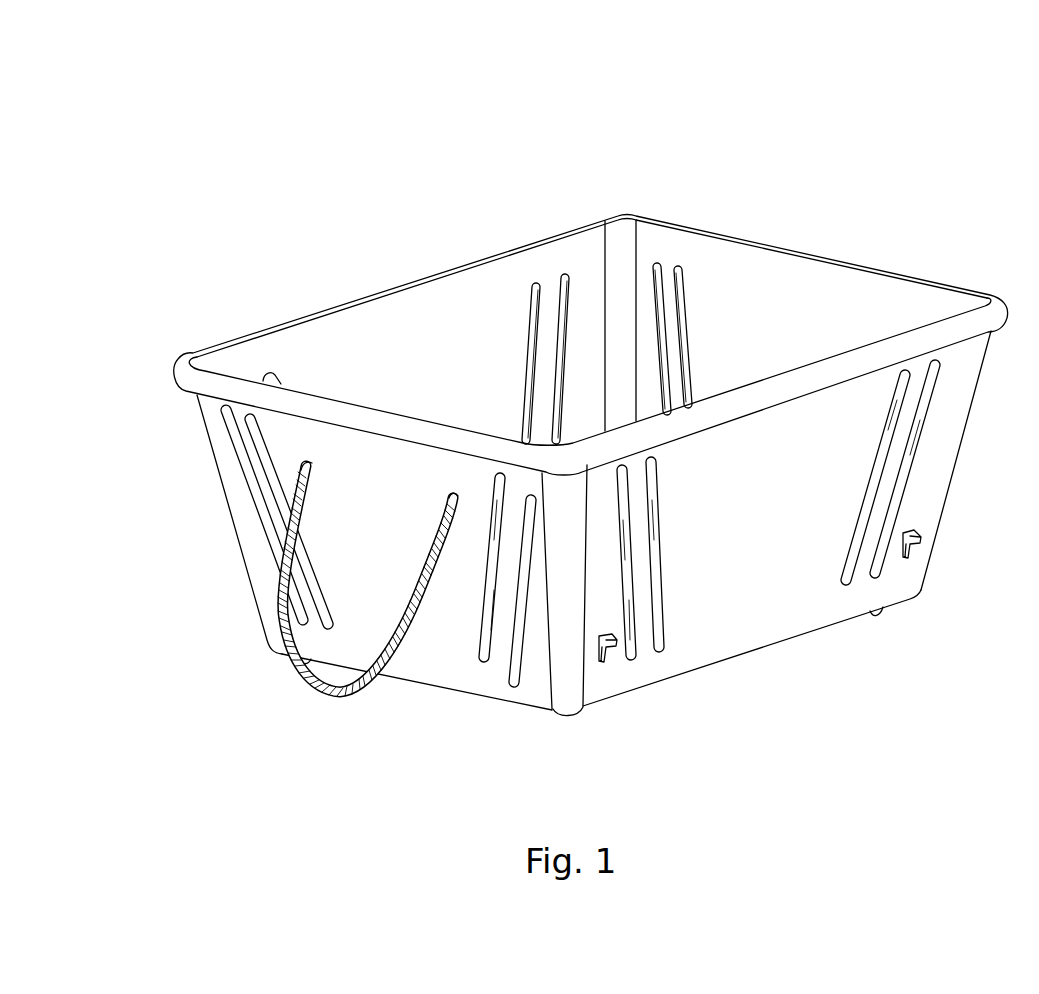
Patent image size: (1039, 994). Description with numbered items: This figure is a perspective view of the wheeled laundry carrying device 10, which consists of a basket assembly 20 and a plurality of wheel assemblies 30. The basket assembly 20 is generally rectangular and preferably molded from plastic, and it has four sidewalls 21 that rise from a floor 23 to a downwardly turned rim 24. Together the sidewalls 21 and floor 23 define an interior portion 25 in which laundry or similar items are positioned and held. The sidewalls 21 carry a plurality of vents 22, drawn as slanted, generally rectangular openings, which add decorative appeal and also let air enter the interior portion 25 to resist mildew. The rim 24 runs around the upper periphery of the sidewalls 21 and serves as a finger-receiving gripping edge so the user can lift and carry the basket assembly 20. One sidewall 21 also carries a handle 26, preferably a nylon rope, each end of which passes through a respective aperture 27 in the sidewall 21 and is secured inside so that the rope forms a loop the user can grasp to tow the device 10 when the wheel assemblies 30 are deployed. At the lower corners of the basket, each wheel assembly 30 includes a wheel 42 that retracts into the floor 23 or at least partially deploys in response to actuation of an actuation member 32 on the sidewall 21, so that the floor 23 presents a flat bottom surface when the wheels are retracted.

The device 10 is at (108, 166).
The basket assembly 20 is at (910, 242).
The sidewalls 21 is at (487, 277).
The vents 22 is at (655, 268).
The floor 23 is at (750, 653).
The rim 24 is at (245, 337).
The interior portion 25 is at (390, 325).
The handle 26 is at (373, 677).
The aperture 27 is at (310, 467).
The wheel assemblies 30 is at (289, 670).
The actuation member 32 is at (615, 647).
The wheel 42 is at (307, 668).